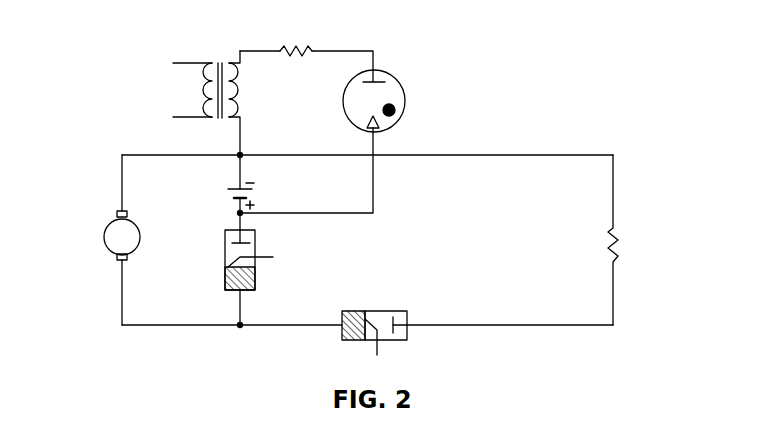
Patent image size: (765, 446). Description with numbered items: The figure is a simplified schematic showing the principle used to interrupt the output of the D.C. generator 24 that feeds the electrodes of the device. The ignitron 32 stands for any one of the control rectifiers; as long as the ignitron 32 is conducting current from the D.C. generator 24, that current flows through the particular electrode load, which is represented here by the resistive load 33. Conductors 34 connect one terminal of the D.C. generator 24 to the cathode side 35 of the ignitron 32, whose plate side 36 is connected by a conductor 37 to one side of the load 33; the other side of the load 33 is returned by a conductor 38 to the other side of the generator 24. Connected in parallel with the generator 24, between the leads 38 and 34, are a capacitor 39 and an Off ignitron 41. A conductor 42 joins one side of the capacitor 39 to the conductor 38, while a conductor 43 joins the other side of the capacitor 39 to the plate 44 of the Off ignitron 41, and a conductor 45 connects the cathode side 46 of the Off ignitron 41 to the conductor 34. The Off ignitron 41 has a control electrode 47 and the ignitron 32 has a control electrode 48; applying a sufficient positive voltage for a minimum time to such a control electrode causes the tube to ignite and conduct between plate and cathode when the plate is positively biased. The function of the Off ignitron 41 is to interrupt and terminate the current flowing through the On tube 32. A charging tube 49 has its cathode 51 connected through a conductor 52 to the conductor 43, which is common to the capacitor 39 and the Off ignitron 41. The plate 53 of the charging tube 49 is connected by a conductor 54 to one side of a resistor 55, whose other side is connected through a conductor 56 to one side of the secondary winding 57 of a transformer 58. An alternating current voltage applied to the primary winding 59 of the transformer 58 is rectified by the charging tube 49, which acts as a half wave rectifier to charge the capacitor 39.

The D.C. generator 24 is at (105, 237).
The ignitron 32 is at (388, 296).
The resistive load 33 is at (619, 235).
The conductors 34 is at (202, 326).
The cathode side 35 is at (357, 311).
The plate side 36 is at (396, 333).
The conductor 37 is at (535, 326).
The conductor 38 is at (139, 155).
The capacitor 39 is at (229, 190).
The Off ignitron 41 is at (193, 260).
The conductor 42 is at (242, 180).
The conductor 43 is at (238, 208).
The plate 44 is at (247, 246).
The conductor 45 is at (244, 311).
The cathode side 46 is at (257, 284).
The control electrode 47 is at (273, 257).
The control electrode 48 is at (377, 350).
The charging tube 49 is at (400, 75).
The cathode 51 is at (380, 129).
The conductor 52 is at (376, 180).
The plate 53 is at (378, 80).
The conductor 54 is at (359, 51).
The resistor 55 is at (313, 51).
The conductor 56 is at (254, 51).
The secondary winding 57 is at (238, 90).
The transformer 58 is at (210, 56).
The primary winding 59 is at (205, 95).